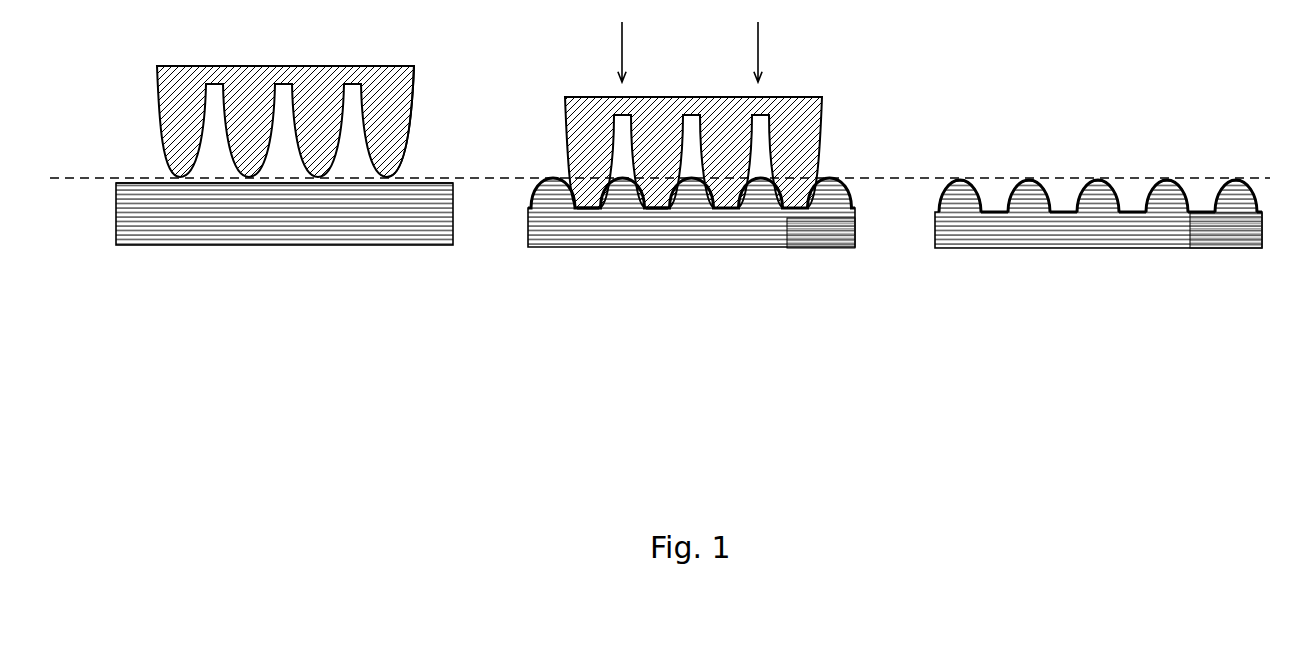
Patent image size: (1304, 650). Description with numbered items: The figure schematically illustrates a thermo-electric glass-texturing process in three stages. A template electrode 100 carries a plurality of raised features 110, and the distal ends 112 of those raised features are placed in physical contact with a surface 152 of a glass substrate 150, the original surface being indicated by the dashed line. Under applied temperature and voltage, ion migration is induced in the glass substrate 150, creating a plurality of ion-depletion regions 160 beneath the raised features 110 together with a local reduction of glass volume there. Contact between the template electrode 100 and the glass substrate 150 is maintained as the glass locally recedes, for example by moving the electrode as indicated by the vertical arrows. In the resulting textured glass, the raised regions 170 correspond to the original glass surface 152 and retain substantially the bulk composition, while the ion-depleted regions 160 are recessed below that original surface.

The template electrode 100 is at (248, 82).
The raised features 110 is at (720, 150).
The distal ends 112 is at (405, 158).
The glass substrate 150 is at (262, 197).
The surface 152 is at (140, 163).
The ion-depletion regions 160 is at (650, 224).
The raised regions 170 is at (1028, 165).